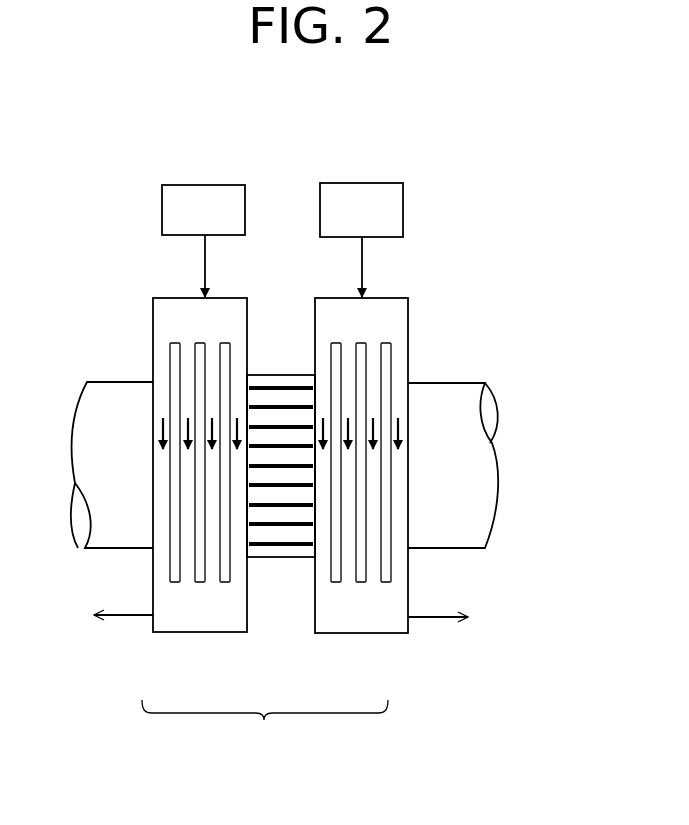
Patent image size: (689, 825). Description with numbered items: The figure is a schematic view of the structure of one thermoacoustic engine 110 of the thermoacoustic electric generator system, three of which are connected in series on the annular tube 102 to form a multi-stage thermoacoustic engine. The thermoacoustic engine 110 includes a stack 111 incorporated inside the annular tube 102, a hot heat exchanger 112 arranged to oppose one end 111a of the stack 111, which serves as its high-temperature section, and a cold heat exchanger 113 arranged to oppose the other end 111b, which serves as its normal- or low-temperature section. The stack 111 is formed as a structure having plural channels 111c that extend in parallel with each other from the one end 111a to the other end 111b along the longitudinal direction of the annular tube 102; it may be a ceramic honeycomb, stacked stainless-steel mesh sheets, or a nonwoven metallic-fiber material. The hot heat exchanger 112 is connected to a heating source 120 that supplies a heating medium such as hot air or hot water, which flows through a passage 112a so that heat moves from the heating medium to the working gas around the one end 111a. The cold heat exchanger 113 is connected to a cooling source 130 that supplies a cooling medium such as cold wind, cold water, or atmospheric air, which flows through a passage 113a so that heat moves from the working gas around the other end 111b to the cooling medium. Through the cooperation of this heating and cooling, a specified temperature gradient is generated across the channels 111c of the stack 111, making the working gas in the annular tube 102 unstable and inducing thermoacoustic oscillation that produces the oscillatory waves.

The thermoacoustic engine 110 is at (265, 726).
The stack 111 is at (285, 560).
The one end of the stack 111a is at (247, 538).
The other end of the stack 111b is at (315, 537).
The channels 111c is at (276, 400).
The hot heat exchanger 112 is at (178, 636).
The passage 112a is at (158, 394).
The cold heat exchanger 113 is at (352, 636).
The passage 113a is at (394, 374).
The heating source 120 is at (160, 213).
The cooling source 130 is at (405, 215).
The annular tube 102 is at (467, 393).